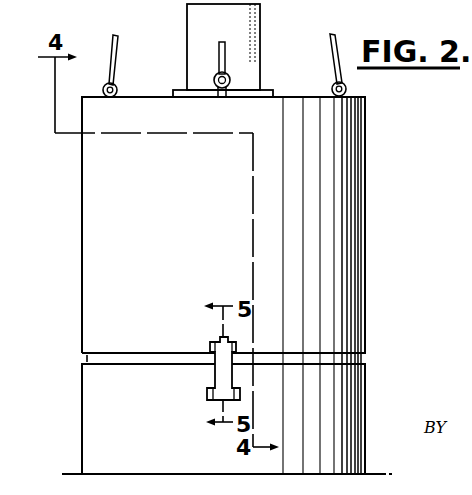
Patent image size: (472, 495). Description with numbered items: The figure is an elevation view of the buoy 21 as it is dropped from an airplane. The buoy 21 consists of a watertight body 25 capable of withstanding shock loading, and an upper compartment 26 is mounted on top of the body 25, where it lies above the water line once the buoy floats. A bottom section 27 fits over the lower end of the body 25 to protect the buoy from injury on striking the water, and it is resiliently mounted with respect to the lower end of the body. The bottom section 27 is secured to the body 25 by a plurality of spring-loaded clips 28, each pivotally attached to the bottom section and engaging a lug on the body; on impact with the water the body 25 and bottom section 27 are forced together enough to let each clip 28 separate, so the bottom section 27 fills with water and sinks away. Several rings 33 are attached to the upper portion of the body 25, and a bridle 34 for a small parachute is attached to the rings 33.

The buoy 21 is at (363, 183).
The watertight body 25 is at (365, 252).
The upper compartment 26 is at (188, 29).
The bottom section 27 is at (364, 409).
The spring-loaded clip 28 is at (241, 350).
The ring 33 is at (103, 90).
The bridle 34 is at (116, 59).